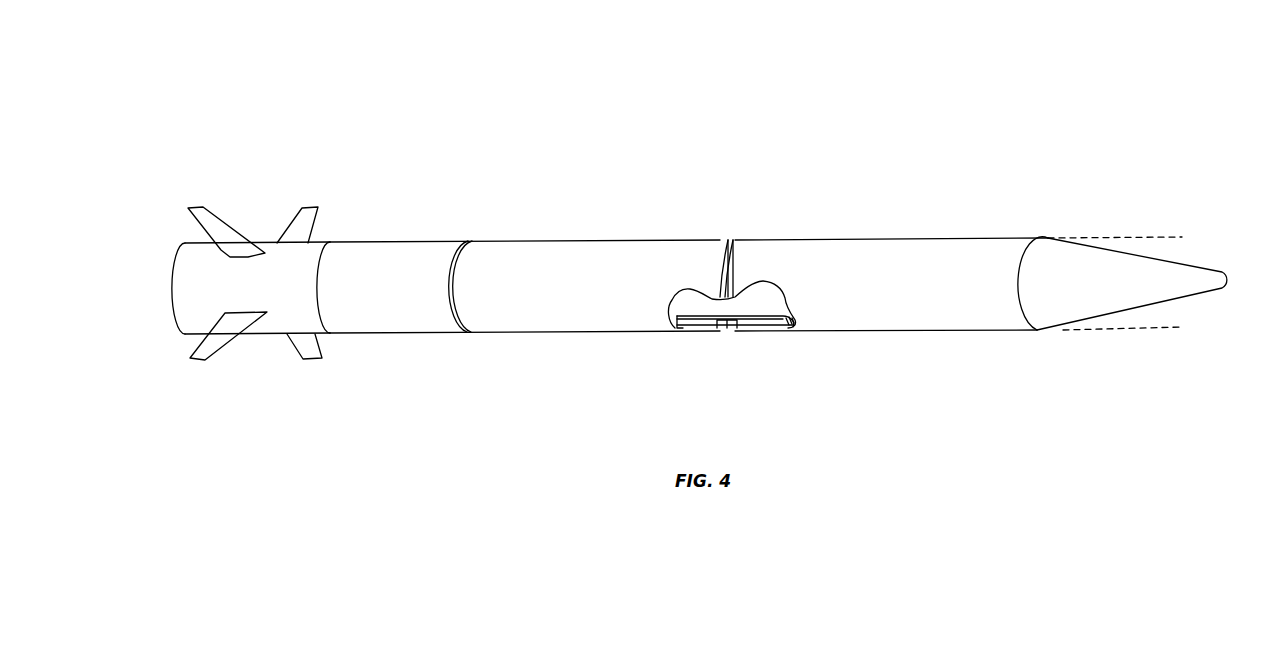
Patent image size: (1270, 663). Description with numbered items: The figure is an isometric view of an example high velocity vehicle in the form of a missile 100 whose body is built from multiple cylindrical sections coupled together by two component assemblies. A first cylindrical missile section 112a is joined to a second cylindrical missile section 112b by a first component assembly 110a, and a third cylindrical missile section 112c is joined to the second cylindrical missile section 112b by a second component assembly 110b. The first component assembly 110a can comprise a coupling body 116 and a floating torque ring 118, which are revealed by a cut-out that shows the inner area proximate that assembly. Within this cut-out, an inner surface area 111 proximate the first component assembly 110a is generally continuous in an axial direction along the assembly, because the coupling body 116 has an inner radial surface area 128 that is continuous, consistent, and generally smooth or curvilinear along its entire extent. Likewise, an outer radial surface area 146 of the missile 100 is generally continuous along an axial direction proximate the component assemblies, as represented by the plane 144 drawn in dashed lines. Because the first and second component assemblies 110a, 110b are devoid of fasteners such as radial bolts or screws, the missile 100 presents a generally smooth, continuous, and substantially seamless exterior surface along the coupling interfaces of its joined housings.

The missile 100 is at (428, 80).
The third cylindrical missile section 112c is at (392, 255).
The second component assembly 110b is at (471, 230).
The second cylindrical missile section 112b is at (555, 255).
The first cylindrical missile section 112a is at (908, 260).
The plane 144 is at (1120, 237).
The first component assembly 110a is at (734, 230).
The outer radial surface area 146 is at (735, 257).
The floating torque ring 118 is at (718, 268).
The inner surface area 111 is at (768, 309).
The coupling body 116 is at (750, 303).
The inner radial surface area 128 is at (705, 307).